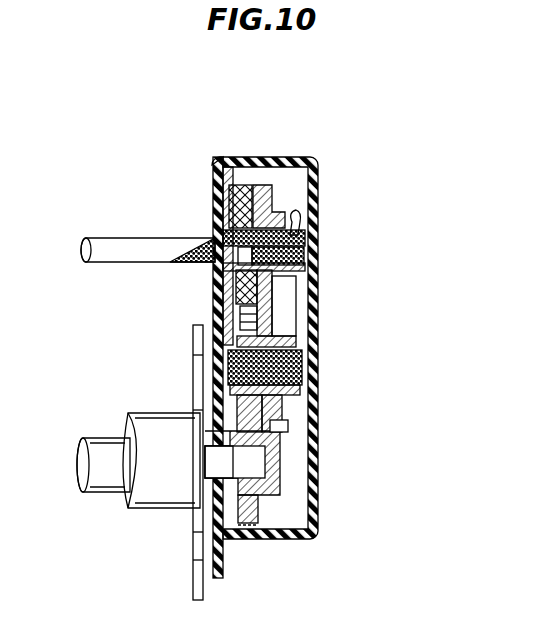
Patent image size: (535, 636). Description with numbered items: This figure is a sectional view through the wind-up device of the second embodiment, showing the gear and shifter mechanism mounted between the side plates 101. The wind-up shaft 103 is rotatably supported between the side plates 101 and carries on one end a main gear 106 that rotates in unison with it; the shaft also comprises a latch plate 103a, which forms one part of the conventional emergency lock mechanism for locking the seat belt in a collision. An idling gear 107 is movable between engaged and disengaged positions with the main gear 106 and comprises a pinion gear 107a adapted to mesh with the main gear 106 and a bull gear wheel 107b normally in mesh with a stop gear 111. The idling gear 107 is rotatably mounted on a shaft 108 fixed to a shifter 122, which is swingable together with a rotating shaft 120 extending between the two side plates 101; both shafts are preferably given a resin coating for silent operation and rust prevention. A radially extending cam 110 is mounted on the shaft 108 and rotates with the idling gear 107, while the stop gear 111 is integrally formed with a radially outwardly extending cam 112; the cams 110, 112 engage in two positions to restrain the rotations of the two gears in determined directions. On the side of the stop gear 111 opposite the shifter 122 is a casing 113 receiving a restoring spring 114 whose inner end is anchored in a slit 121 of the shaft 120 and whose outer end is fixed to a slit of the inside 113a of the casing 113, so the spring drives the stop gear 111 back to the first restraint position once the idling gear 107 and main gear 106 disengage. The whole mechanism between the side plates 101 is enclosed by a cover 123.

The side plate 101 is at (228, 558).
The wind-up shaft 103 is at (112, 490).
The latch plate 103a is at (197, 568).
The main gear 106 is at (257, 503).
The idling gear 107 is at (265, 410).
The pinion gear 107a is at (218, 462).
The bull gear wheel 107b is at (284, 426).
The shaft 108 is at (302, 373).
The cam 110 is at (284, 325).
The stop gear 111 is at (316, 167).
The cam 112 is at (272, 291).
The casing 113 is at (270, 185).
The inside of casing 113a is at (240, 185).
The restoring spring 114 is at (236, 292).
The rotating shaft 120 is at (200, 240).
The slit 121 is at (318, 251).
The shifter 122 is at (218, 178).
The cover 123 is at (300, 212).